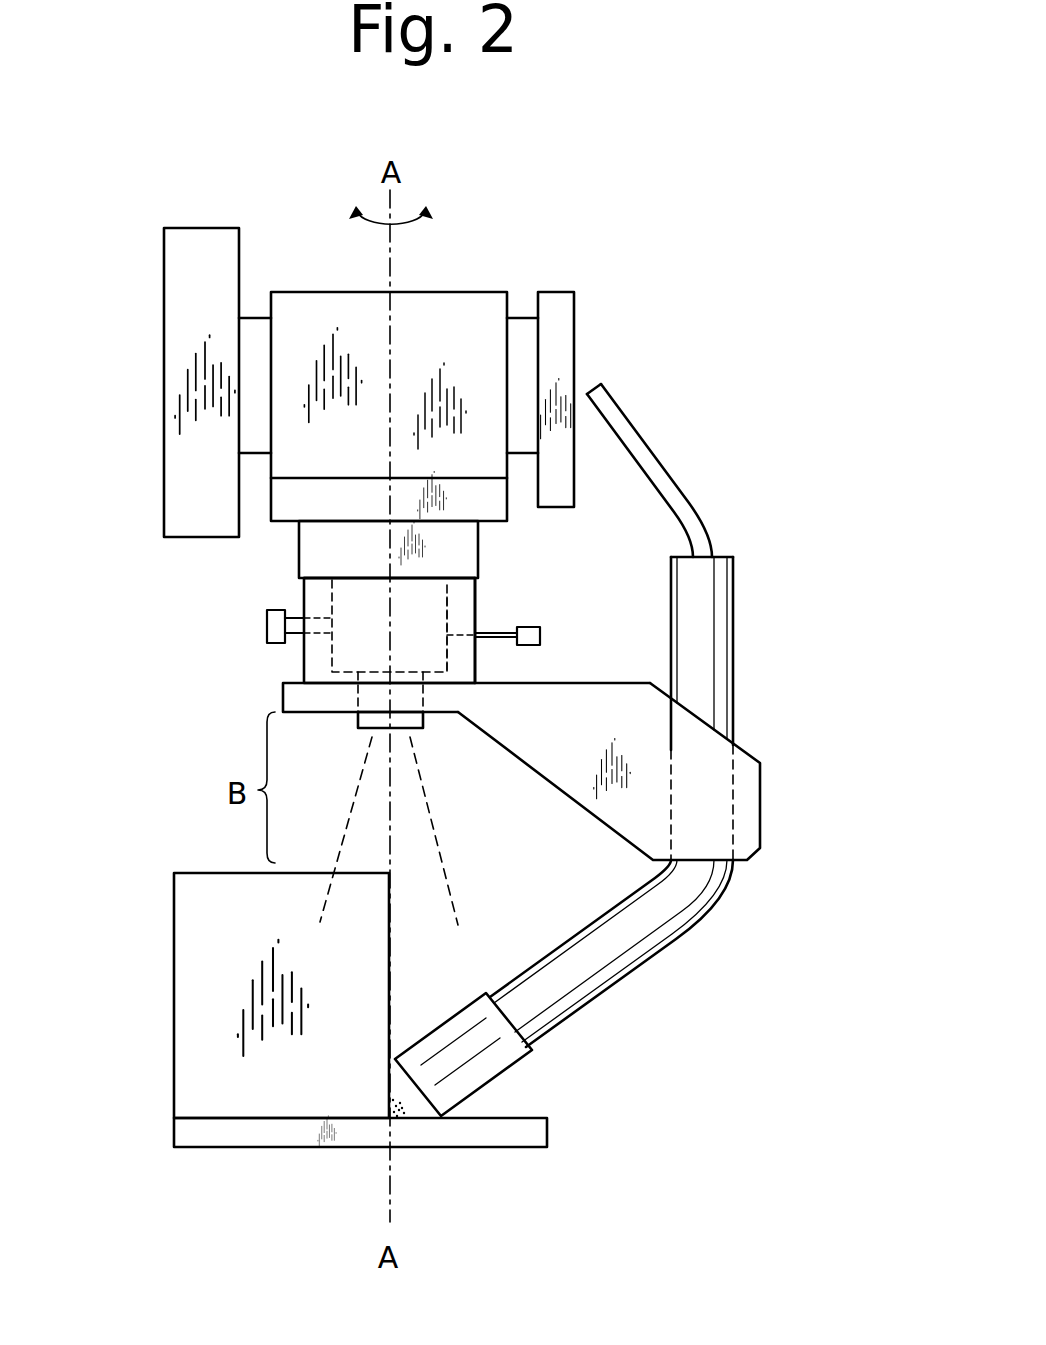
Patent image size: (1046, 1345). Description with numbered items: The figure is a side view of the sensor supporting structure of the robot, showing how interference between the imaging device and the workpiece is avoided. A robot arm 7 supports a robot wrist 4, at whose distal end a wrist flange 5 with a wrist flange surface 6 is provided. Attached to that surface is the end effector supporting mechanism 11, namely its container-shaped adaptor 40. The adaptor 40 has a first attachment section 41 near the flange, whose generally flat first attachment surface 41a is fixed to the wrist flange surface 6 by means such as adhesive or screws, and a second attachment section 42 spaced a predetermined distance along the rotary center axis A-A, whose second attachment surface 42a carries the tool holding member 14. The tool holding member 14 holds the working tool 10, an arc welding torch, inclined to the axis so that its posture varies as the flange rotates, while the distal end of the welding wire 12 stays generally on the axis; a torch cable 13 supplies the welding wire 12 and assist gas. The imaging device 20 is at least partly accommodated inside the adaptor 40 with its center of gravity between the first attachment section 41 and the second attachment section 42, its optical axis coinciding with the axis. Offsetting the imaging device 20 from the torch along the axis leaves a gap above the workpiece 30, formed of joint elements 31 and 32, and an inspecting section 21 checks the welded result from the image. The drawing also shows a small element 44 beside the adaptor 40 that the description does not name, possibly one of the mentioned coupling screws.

The robot wrist 4 is at (475, 352).
The wrist flange 5 is at (467, 550).
The wrist flange surface 6 is at (462, 582).
The robot arm 7 is at (565, 359).
The working tool 10 is at (583, 972).
The end effector supporting mechanism 11 is at (677, 708).
The welding wire 12 is at (405, 1097).
The torch cable 13 is at (653, 450).
The tool holding member 14 is at (648, 750).
The imaging device 20 is at (302, 655).
The inspecting section 21 is at (542, 638).
The workpiece 30 is at (304, 1078).
The joint element 31 is at (447, 1137).
The joint element 32 is at (192, 998).
The adaptor 40 is at (460, 610).
The first attachment section 41 is at (347, 600).
The first attachment surface 41a is at (347, 573).
The second attachment section 42 is at (460, 658).
The second attachment surface 42a is at (455, 687).
The fixing screw 44 is at (268, 628).